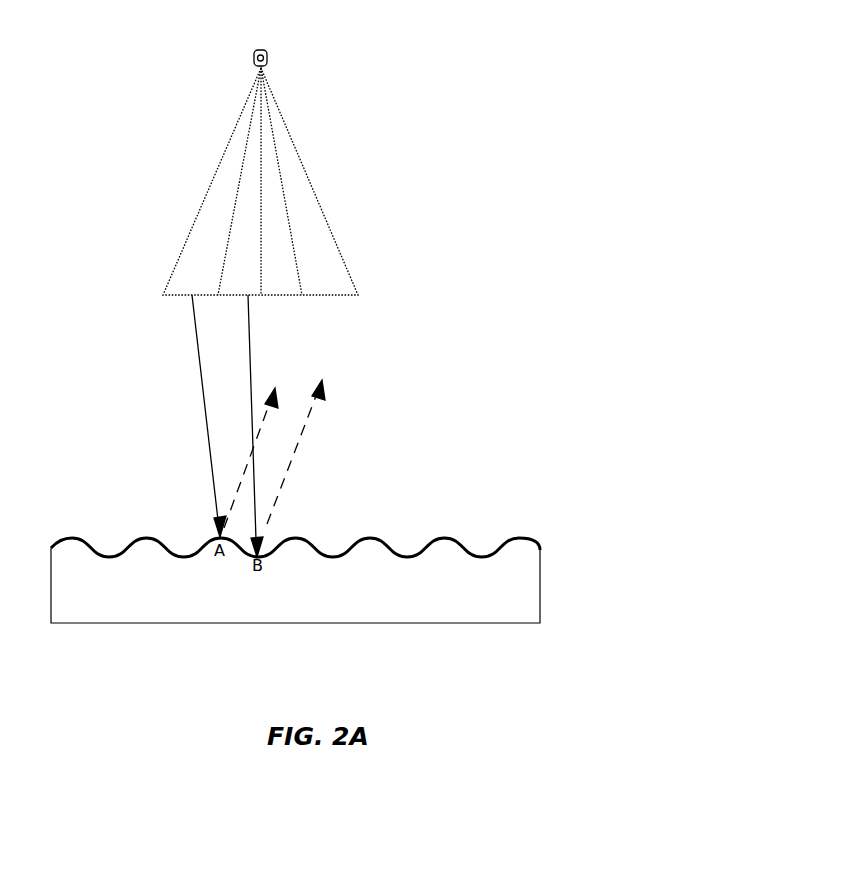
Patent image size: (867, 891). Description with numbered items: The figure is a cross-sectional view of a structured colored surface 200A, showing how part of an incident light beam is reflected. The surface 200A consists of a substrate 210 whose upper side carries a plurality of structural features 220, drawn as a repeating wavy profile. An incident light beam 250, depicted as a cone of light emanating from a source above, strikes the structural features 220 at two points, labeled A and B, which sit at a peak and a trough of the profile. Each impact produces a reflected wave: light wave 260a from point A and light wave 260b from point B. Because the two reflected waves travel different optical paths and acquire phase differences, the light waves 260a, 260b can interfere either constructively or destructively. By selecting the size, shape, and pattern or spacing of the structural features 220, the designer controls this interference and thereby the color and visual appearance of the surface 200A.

The structured colored surface 200A is at (549, 80).
The incident light beam 250 is at (310, 162).
The light wave 260a is at (264, 444).
The light wave 260b is at (313, 452).
The structural features 220 is at (492, 538).
The substrate 210 is at (542, 583).